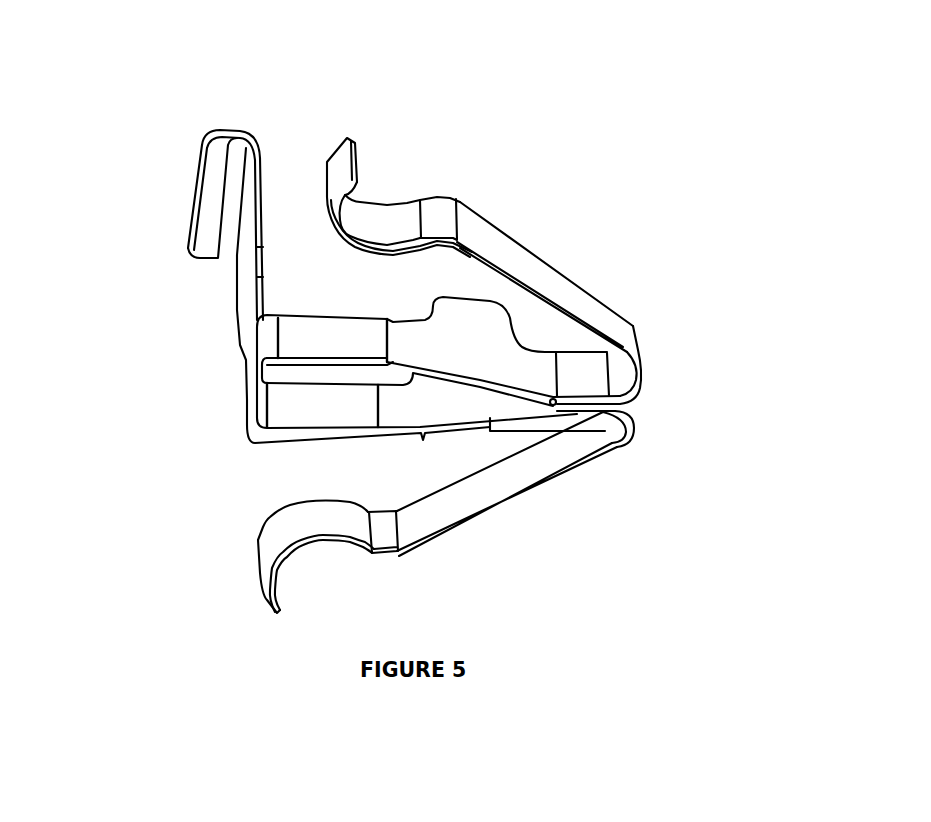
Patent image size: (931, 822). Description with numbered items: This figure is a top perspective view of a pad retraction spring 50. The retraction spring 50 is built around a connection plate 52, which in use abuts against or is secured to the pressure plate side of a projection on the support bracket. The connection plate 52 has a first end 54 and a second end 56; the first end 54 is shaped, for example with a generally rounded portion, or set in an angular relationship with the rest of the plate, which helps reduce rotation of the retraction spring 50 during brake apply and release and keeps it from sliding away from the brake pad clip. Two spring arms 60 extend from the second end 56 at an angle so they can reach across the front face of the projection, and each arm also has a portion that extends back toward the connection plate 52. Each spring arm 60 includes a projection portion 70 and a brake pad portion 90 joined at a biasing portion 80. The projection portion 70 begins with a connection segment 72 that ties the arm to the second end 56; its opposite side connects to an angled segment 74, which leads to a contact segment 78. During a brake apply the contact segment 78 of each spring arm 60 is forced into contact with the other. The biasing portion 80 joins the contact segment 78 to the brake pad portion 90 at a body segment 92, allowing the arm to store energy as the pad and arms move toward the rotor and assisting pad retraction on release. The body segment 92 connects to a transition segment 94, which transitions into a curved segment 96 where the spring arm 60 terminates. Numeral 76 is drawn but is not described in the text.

The retraction spring 50 is at (429, 335).
The connection plate 52 is at (146, 277).
The first end 54 is at (208, 200).
The second end 56 is at (243, 333).
The spring arms 60 is at (554, 406).
The projection portion 70 is at (452, 357).
The connection segment 72 is at (315, 338).
The angled segment 74 is at (470, 365).
The raised portion 76 is at (455, 305).
The contact segment 78 is at (622, 435).
The biasing portion 80 is at (588, 370).
The brake pad portion 90 is at (404, 335).
The body segment 92 is at (545, 287).
The transition segment 94 is at (395, 371).
The curved segment 96 is at (380, 215).